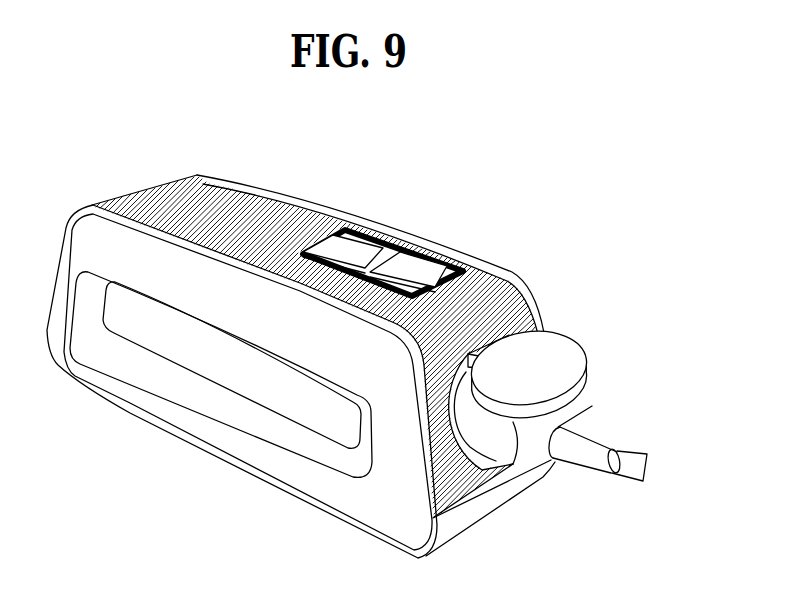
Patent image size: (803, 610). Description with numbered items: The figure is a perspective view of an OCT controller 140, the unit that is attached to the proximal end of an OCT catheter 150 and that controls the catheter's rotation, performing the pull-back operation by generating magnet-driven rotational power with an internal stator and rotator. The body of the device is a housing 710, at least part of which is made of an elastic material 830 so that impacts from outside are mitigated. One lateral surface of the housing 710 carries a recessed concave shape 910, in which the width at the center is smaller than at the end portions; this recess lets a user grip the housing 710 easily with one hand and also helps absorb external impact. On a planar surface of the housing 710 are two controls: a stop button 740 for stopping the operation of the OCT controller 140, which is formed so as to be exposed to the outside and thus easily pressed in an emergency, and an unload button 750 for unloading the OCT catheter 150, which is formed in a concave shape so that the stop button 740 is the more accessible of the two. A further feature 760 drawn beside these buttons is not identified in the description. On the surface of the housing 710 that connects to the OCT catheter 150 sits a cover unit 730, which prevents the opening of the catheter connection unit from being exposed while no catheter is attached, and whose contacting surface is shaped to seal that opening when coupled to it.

The OCT controller 140 is at (340, 340).
The OCT catheter 150 is at (592, 448).
The housing 710 is at (209, 174).
The cover unit 730 is at (557, 357).
The stop button 740 is at (352, 243).
The unload button 750 is at (412, 283).
The button frame 760 is at (466, 268).
The elastic material 830 is at (137, 200).
The recessed concave shape 910 is at (187, 343).